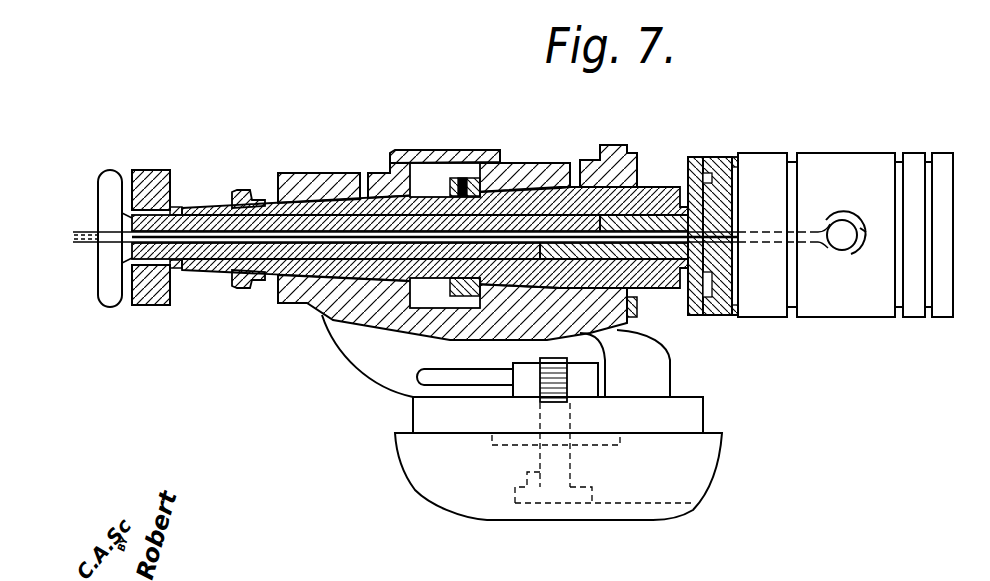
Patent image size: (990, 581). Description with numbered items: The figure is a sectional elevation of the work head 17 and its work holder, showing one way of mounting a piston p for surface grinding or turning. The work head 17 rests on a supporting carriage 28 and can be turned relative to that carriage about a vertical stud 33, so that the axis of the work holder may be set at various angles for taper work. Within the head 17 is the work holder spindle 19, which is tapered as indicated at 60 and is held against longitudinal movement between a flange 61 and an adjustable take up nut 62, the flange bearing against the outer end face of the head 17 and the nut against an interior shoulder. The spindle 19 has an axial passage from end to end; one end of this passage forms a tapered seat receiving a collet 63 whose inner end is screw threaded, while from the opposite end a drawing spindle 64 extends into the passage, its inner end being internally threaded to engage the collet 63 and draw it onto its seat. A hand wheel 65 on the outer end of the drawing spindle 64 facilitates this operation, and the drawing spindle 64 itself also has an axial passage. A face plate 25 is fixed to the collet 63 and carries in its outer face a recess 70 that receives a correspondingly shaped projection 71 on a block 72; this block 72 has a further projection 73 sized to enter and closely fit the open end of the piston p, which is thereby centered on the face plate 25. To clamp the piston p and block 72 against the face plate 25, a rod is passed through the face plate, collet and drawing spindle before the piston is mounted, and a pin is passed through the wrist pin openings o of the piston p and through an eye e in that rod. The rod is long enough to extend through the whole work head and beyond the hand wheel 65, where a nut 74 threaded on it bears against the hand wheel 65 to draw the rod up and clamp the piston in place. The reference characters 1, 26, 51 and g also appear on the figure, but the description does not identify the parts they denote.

The shaft 1 is at (214, 238).
The work head 17 is at (530, 172).
The work holder spindle 19 is at (538, 197).
The face plate 25 is at (703, 300).
The pin 26 is at (592, 380).
The carriage 28 is at (685, 462).
The vertical stud 33 is at (540, 405).
The nut 51 is at (244, 188).
The tapered portion of spindle 60 is at (518, 182).
The flange 61 is at (640, 178).
The adjustable take up nut 62 is at (458, 165).
The collet 63 is at (697, 177).
The drawing spindle 64 is at (314, 222).
The hand wheel 65 is at (148, 185).
The recess 70 is at (715, 188).
The projection 71 is at (712, 272).
The block 72 is at (736, 170).
The projection 73 is at (742, 295).
The nut 74 is at (110, 300).
The wrist pin openings o is at (868, 220).
The circle g is at (841, 238).
The eye e is at (846, 247).
The piston p is at (858, 300).